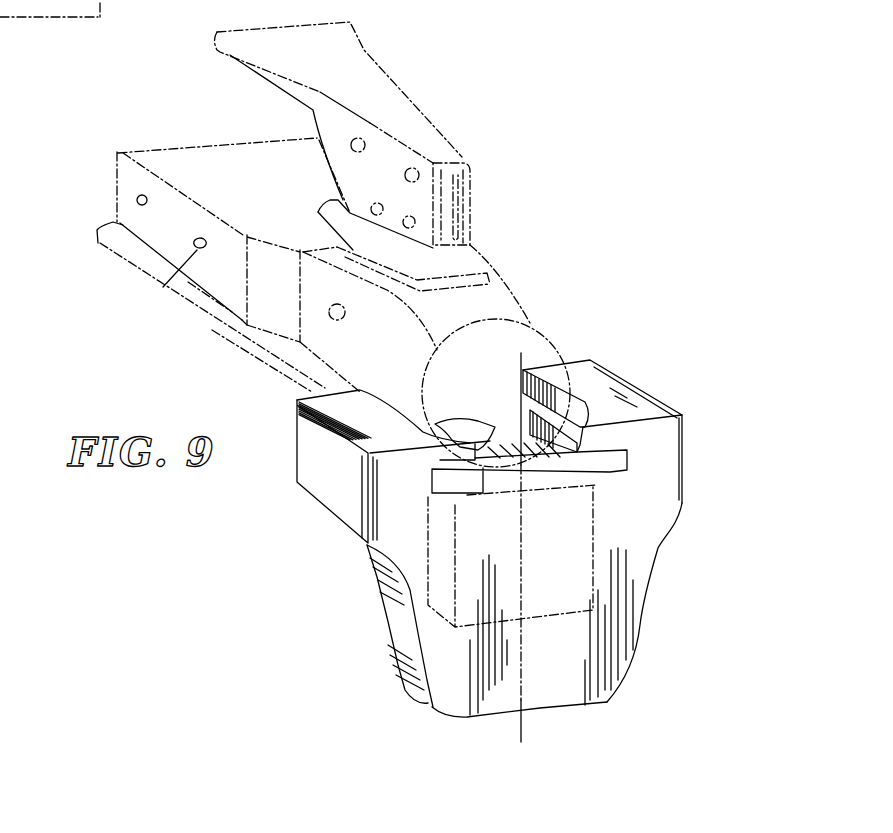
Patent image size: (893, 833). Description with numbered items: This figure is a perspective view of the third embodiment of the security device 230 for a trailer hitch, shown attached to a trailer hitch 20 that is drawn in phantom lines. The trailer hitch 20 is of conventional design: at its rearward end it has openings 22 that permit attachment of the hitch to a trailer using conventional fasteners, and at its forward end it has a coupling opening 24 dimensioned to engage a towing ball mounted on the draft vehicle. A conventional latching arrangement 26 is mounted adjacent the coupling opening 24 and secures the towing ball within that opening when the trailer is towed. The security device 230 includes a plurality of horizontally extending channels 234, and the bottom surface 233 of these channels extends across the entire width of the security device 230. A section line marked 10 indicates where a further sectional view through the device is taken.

The section line 10- 10 is at (472, 740).
The trailer hitch 20 is at (500, 255).
The openings 22 is at (137, 200).
The coupling opening 24 is at (537, 333).
The latching arrangement 26 is at (443, 110).
The security device 230 is at (625, 315).
The bottom surface 233 is at (597, 473).
The horizontally extending channels 234 is at (440, 460).